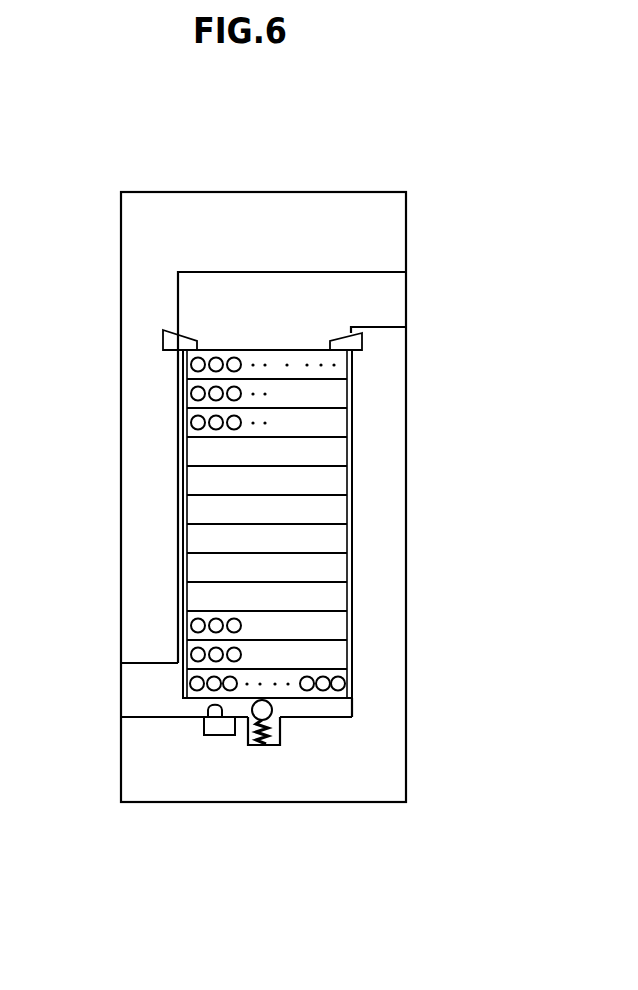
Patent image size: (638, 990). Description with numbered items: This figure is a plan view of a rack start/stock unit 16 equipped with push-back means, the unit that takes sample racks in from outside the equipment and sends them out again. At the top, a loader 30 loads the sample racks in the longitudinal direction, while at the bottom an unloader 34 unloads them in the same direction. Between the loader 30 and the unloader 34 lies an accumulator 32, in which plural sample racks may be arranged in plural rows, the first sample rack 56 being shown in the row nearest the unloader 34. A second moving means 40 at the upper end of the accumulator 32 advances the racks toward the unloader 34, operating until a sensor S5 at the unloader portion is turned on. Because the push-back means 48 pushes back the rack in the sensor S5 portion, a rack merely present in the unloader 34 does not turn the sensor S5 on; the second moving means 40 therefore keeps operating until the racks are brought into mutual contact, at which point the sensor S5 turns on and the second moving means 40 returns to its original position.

The rack start/stock unit 16 is at (62, 140).
The loader 30 is at (322, 298).
The second moving means 40 is at (375, 347).
The accumulator 32 is at (350, 520).
The first sample rack 56 is at (350, 667).
The unloader 34 is at (170, 702).
The sensor S5 is at (225, 735).
The push-back means 48 is at (285, 731).